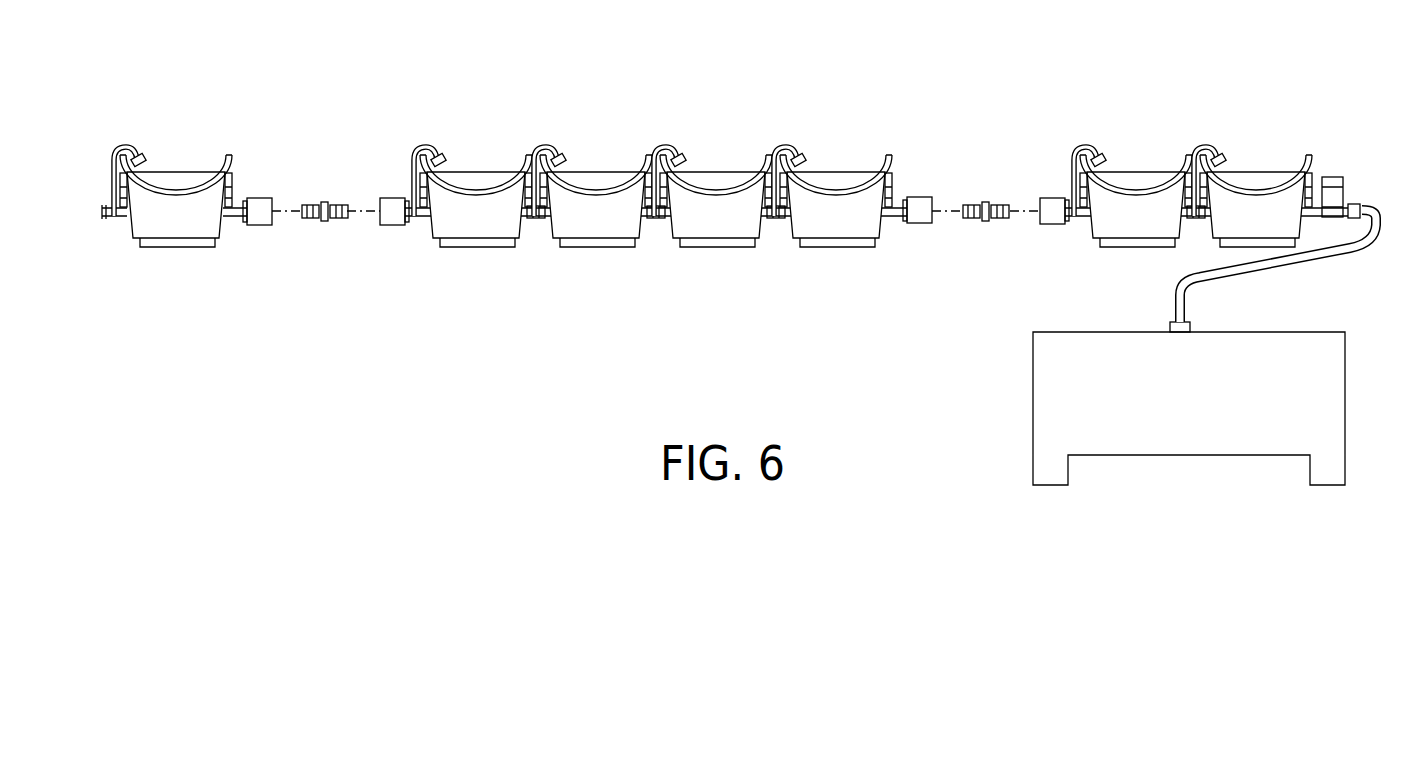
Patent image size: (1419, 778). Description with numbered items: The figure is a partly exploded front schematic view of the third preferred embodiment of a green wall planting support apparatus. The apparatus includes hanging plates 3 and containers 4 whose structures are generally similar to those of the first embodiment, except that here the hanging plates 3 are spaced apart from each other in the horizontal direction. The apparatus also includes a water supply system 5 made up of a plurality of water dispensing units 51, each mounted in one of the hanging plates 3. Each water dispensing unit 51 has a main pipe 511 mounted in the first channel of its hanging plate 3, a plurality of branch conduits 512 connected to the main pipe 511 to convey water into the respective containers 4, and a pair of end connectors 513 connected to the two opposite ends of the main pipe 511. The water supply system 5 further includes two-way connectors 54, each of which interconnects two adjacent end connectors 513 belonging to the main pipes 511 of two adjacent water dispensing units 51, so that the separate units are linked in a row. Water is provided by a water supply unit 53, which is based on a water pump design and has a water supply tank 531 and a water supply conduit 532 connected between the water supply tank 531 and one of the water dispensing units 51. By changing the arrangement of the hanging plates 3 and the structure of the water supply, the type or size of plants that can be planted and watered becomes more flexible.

The hanging plate 3 is at (231, 178).
The container 4 is at (808, 222).
The water supply system 5 is at (1007, 194).
The water dispensing unit 51 is at (895, 221).
The main pipe 511 is at (550, 220).
The branch conduit 512 is at (682, 155).
The end connector 513 is at (383, 224).
The water supply unit 53 is at (1170, 305).
The water supply tank 531 is at (1173, 432).
The water supply conduit 532 is at (1350, 255).
The two-way connector 54 is at (993, 220).